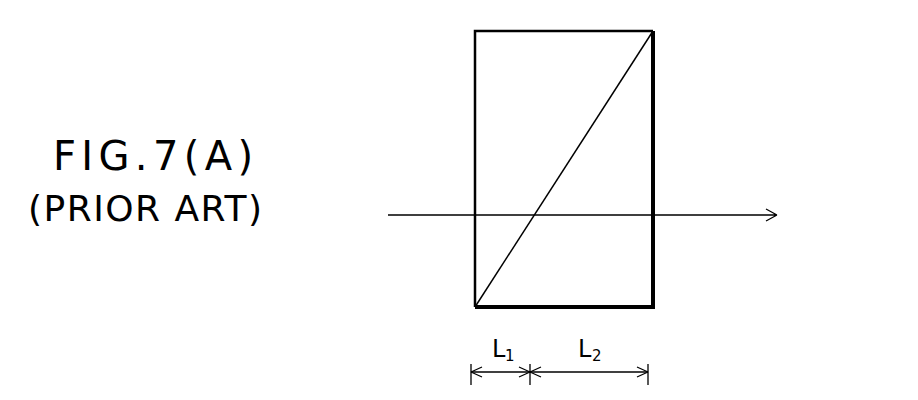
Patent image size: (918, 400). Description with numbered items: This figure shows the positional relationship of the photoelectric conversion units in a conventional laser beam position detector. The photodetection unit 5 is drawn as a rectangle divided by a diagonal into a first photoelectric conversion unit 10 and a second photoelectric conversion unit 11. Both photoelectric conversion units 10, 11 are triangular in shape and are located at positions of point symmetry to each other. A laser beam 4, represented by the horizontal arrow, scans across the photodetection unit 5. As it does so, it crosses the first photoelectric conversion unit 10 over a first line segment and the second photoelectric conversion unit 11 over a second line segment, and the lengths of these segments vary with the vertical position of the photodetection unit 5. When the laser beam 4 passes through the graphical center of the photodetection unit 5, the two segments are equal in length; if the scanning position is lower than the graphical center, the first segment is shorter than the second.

The laser beam 4 is at (710, 215).
The photodetection unit 5 is at (682, 47).
The first photoelectric conversion unit 10 is at (507, 100).
The second photoelectric conversion unit 11 is at (638, 138).